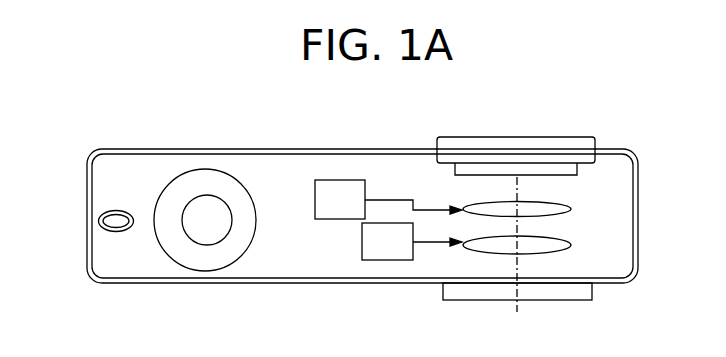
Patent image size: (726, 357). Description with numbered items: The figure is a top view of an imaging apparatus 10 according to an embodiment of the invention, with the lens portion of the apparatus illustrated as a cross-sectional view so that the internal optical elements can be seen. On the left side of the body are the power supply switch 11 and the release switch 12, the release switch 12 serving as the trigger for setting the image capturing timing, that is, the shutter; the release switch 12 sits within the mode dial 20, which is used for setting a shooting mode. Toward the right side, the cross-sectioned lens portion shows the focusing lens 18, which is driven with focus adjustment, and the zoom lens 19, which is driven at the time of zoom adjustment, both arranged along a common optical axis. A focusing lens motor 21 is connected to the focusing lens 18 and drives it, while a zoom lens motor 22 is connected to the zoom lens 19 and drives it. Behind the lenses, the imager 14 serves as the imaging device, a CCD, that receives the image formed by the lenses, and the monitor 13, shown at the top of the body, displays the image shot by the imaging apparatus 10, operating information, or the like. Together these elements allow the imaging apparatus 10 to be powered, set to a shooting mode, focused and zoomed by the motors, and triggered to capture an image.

The imaging apparatus 10 is at (622, 105).
The power supply switch 11 is at (99, 217).
The release switch 12 is at (208, 233).
The monitor 13 is at (520, 138).
The imager 14 is at (577, 168).
The focusing lens 18 is at (570, 209).
The zoom lens 19 is at (570, 245).
The mode dial 20 is at (180, 247).
The focusing lens motor (M1) 21 is at (338, 180).
The zoom lens motor (M2) 22 is at (388, 260).